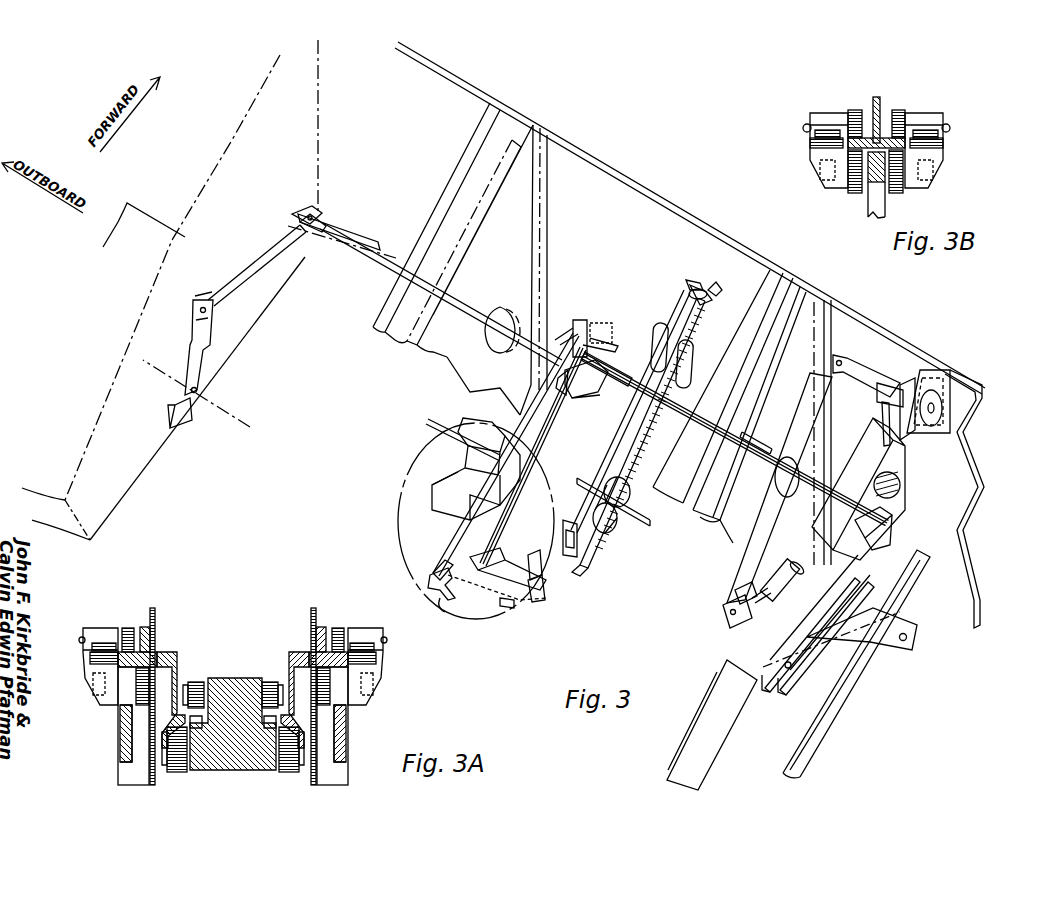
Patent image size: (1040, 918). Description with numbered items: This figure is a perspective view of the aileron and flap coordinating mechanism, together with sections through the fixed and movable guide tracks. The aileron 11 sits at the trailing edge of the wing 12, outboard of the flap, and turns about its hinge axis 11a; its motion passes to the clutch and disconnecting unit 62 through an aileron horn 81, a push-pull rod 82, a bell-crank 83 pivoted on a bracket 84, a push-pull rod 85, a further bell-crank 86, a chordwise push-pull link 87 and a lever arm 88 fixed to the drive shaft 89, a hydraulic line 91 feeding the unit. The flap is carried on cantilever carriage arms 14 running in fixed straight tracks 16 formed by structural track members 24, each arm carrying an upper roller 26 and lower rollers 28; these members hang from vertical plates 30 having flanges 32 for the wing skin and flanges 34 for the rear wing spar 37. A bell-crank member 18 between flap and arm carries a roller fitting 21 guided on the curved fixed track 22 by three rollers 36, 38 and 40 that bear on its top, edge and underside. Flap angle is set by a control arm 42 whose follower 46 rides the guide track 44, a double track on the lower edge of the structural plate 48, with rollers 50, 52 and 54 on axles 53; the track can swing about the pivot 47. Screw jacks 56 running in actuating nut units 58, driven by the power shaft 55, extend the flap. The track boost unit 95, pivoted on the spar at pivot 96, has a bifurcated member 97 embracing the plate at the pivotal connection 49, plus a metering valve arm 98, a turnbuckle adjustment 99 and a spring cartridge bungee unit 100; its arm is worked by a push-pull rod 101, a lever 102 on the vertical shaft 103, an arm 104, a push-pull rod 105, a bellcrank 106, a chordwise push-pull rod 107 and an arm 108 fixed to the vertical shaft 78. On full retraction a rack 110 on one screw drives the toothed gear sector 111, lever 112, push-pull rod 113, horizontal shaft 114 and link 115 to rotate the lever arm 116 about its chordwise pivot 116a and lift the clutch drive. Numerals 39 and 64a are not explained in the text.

In FIG. 3, the aileron 11 is at (153, 462).
In FIG. 3, the hinge axis 11a is at (232, 410).
In FIG. 3, the wing 12 is at (658, 198).
In FIG. 3A, the cantilever carriage arm 14 is at (238, 678).
In FIG. 3A, the fixed straight track 16 is at (196, 772).
In FIG. 3A, the bell-crank member 18 is at (122, 712).
In FIG. 3A, the roller fitting 21 is at (92, 634).
In FIG. 3A, the curved fixed track 22 is at (145, 627).
In FIG. 3A, the structural track member 24 is at (172, 655).
In FIG. 3A, the upper roller 26 is at (200, 684).
In FIG. 3A, the lower roller 28 is at (178, 772).
In FIG. 3, the vertical plate 30 is at (623, 401).
In FIG. 3A, the vertical plate 30 is at (157, 614).
In FIG. 3, the flange 32 is at (477, 137).
In FIG. 3, the flange 34 is at (549, 210).
In FIG. 3A, the roller 36 is at (128, 630).
In FIG. 3, the rear wing spar 37 is at (994, 430).
In FIG. 3A, the roller 38 is at (90, 660).
In FIG. 3A, the screw 39 is at (96, 690).
In FIG. 3A, the roller 40 is at (146, 712).
In FIG. 3B, the control arm 42 is at (876, 217).
In FIG. 3, the guide track 44 is at (858, 696).
In FIG. 3B, the guide track 44 is at (868, 138).
In FIG. 3B, the follower 46 is at (814, 113).
In FIG. 3, the pivot 47 is at (915, 644).
In FIG. 3, the structural plate 48 is at (700, 682).
In FIG. 3B, the structural plate 48 is at (880, 98).
In FIG. 3, the pivotal connection 49 is at (792, 668).
In FIG. 3B, the roller 50 is at (854, 110).
In FIG. 3B, the roller 52 is at (810, 145).
In FIG. 3B, the axle 53 is at (830, 186).
In FIG. 3B, the roller 54 is at (856, 193).
In FIG. 3, the power shaft 55 is at (648, 522).
In FIG. 3, the screw jack 56 is at (592, 546).
In FIG. 3, the actuating nut unit 58 is at (610, 533).
In FIG. 3, the clutch and disconnecting unit 62 is at (388, 500).
In FIG. 3, the actuator block 64a is at (462, 458).
In FIG. 3, the vertical shaft 78 is at (458, 612).
In FIG. 3, the aileron horn 81 is at (212, 325).
In FIG. 3, the push-pull rod 82 is at (252, 264).
In FIG. 3, the bell-crank 83 is at (305, 216).
In FIG. 3, the bracket 84 is at (328, 268).
In FIG. 3, the push-pull rod 85 is at (398, 258).
In FIG. 3, the bell-crank 86 is at (570, 395).
In FIG. 3, the push-pull link 87 is at (582, 430).
In FIG. 3, the lever arm 88 is at (478, 584).
In FIG. 3, the drive shaft 89 is at (462, 536).
In FIG. 3, the hydraulic line 91 is at (445, 424).
In FIG. 3, the track boost unit 95 is at (922, 498).
In FIG. 3, the pivot 96 is at (935, 410).
In FIG. 3, the bifurcated member 97 is at (800, 652).
In FIG. 3, the metering valve arm 98 is at (760, 622).
In FIG. 3, the metering valve turnbuckle adjustment 99 is at (790, 578).
In FIG. 3, the spring cartridge bungee unit 100 is at (795, 530).
In FIG. 3, the push-pull rod 101 is at (785, 483).
In FIG. 3, the lever 102 is at (868, 372).
In FIG. 3, the vertical shaft 103 is at (878, 418).
In FIG. 3, the arm 104 is at (885, 522).
In FIG. 3, the push-pull rod 105 is at (765, 460).
In FIG. 3, the bellcrank 106 is at (596, 350).
In FIG. 3, the push-pull rod 107 is at (522, 420).
In FIG. 3, the arm 108 is at (440, 596).
In FIG. 3, the rack 110 is at (712, 285).
In FIG. 3, the toothed gear sector 111 is at (712, 285).
In FIG. 3, the lever 112 is at (693, 280).
In FIG. 3, the push-pull rod 113 is at (684, 312).
In FIG. 3, the horizontal shaft 114 is at (560, 556).
In FIG. 3, the link 115 is at (542, 578).
In FIG. 3, the lever arm 116 is at (535, 598).
In FIG. 3, the chordwise pivot 116a is at (505, 612).